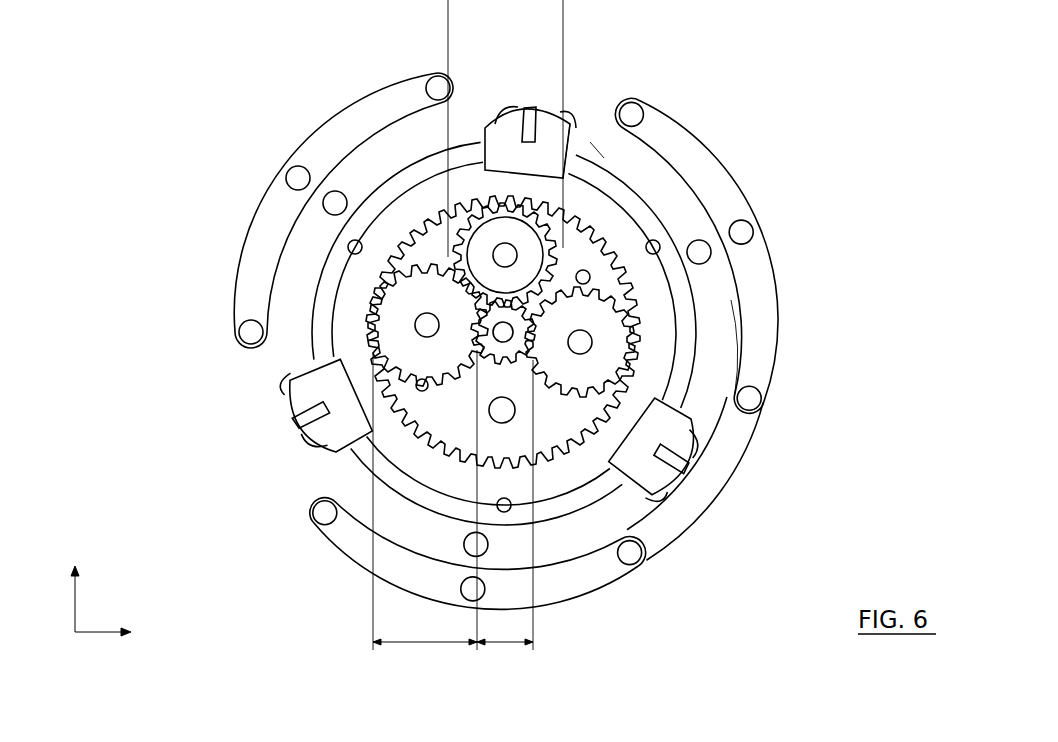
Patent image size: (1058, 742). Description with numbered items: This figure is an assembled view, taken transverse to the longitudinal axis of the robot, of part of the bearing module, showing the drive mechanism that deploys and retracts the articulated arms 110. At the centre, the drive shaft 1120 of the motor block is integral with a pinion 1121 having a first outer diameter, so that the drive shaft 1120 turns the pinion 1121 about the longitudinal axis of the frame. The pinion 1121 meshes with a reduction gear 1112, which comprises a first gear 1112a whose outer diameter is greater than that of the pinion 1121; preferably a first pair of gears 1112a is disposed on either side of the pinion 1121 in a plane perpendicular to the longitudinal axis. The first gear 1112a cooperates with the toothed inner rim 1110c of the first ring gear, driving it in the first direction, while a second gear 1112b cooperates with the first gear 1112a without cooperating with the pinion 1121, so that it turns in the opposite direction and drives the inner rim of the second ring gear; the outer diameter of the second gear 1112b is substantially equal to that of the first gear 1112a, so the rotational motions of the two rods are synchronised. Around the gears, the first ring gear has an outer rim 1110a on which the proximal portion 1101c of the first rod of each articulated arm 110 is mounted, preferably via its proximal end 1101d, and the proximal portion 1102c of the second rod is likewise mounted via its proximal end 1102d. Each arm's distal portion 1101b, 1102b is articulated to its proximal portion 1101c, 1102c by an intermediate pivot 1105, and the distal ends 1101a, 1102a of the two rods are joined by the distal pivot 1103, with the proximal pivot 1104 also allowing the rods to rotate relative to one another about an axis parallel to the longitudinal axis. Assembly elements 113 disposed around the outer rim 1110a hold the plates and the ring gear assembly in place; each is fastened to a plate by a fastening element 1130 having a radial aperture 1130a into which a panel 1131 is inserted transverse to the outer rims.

The articulated arm 110 is at (501, 325).
The assembly element 113 is at (620, 89).
The distal end of the first rod 1101a is at (741, 232).
The distal portion of the first rod 1101b is at (712, 188).
The proximal portion of the first rod 1101c is at (703, 466).
The proximal end of the first rod 1101d is at (700, 510).
The distal end of the second rod 1102a is at (699, 252).
The distal portion of the second rod 1102b is at (735, 350).
The proximal portion of the second rod 1102c is at (736, 160).
The proximal end of the second rod 1102d is at (580, 130).
The distal pivot 1103 is at (763, 325).
The proximal pivot 1104 is at (703, 407).
The intermediate pivot 1105 is at (633, 114).
The outer rim 1110a is at (415, 178).
The inner rim 1110c is at (385, 242).
The reduction gear 1112 is at (338, 300).
The first gear 1112a is at (553, 325).
The second gear 1112b is at (483, 262).
The drive shaft 1120 is at (503, 332).
The pinion 1121 is at (507, 352).
The fastening element 1130 is at (547, 123).
The aperture 1130a is at (538, 142).
The panel 1131 is at (532, 117).